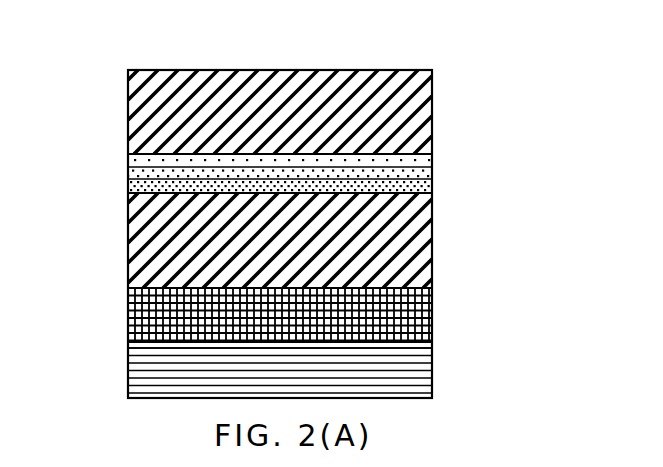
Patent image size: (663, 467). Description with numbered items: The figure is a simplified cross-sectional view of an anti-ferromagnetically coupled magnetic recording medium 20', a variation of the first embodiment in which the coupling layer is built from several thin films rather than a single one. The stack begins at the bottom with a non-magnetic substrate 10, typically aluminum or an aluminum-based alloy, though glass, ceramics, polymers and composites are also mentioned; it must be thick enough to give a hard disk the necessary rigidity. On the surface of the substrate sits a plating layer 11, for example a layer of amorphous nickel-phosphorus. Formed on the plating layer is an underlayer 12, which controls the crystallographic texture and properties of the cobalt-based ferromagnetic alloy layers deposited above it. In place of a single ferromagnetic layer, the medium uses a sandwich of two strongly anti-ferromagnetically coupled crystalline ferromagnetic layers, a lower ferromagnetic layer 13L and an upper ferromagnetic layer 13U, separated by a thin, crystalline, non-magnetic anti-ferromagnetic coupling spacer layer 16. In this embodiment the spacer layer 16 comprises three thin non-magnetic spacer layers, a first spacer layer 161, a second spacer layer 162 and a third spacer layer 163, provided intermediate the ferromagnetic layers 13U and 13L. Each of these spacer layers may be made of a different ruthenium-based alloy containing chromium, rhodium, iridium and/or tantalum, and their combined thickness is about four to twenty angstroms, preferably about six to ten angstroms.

The AFC magnetic recording medium 20' is at (311, 207).
The upper ferromagnetic layer 13U is at (450, 113).
The non-magnetic spacer layer 16 is at (563, 150).
The third spacer layer 163 is at (450, 160).
The second spacer layer 162 is at (450, 171).
The first spacer layer 161 is at (450, 186).
The lower ferromagnetic layer 13L is at (452, 235).
The underlayer 12 is at (452, 313).
The plating layer 11 is at (452, 342).
The non-magnetic substrate 10 is at (452, 369).